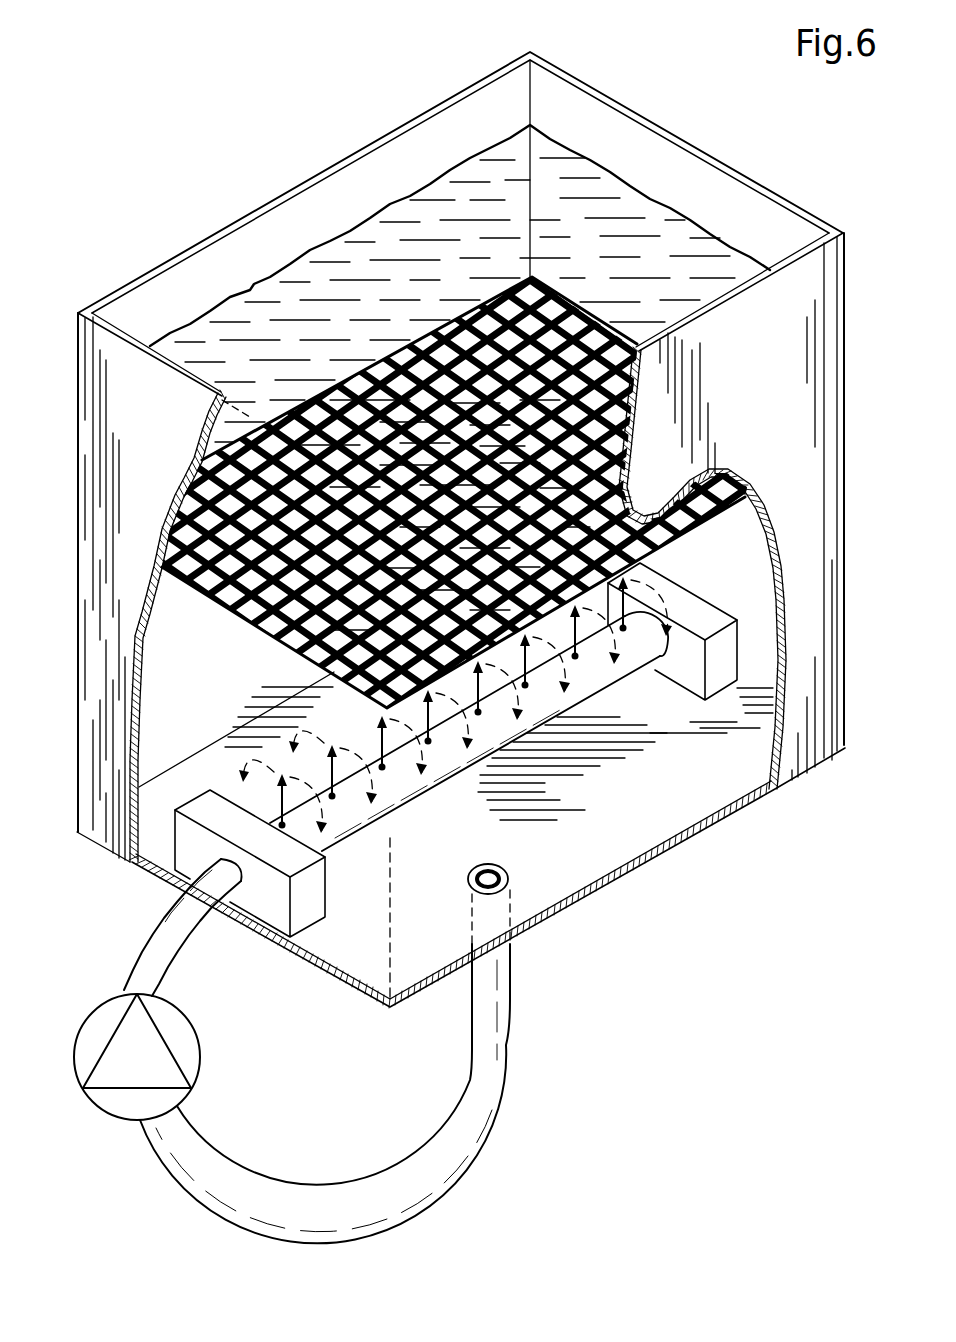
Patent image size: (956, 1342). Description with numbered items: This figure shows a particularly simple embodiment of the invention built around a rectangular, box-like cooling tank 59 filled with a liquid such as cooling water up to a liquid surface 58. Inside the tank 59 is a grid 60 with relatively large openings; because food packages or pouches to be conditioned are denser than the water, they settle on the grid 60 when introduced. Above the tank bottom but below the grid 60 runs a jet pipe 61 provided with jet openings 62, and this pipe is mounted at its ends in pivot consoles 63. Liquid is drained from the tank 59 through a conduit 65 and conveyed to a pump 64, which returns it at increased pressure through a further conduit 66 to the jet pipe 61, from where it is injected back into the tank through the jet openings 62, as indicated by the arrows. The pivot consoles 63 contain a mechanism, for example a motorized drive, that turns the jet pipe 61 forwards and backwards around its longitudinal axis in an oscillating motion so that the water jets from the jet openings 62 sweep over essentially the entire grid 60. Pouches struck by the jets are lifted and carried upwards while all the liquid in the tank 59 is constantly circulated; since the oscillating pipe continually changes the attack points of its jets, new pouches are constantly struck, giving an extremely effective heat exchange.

The liquid surface 58 is at (313, 250).
The cooling tank 59 is at (77, 683).
The grid 60 is at (292, 643).
The jet pipe 61 is at (408, 805).
The jet openings 62 is at (282, 798).
The pivot consoles 63 is at (315, 877).
The pump 64 is at (97, 1097).
The conduit 65 is at (484, 1082).
The conduit 66 is at (163, 948).